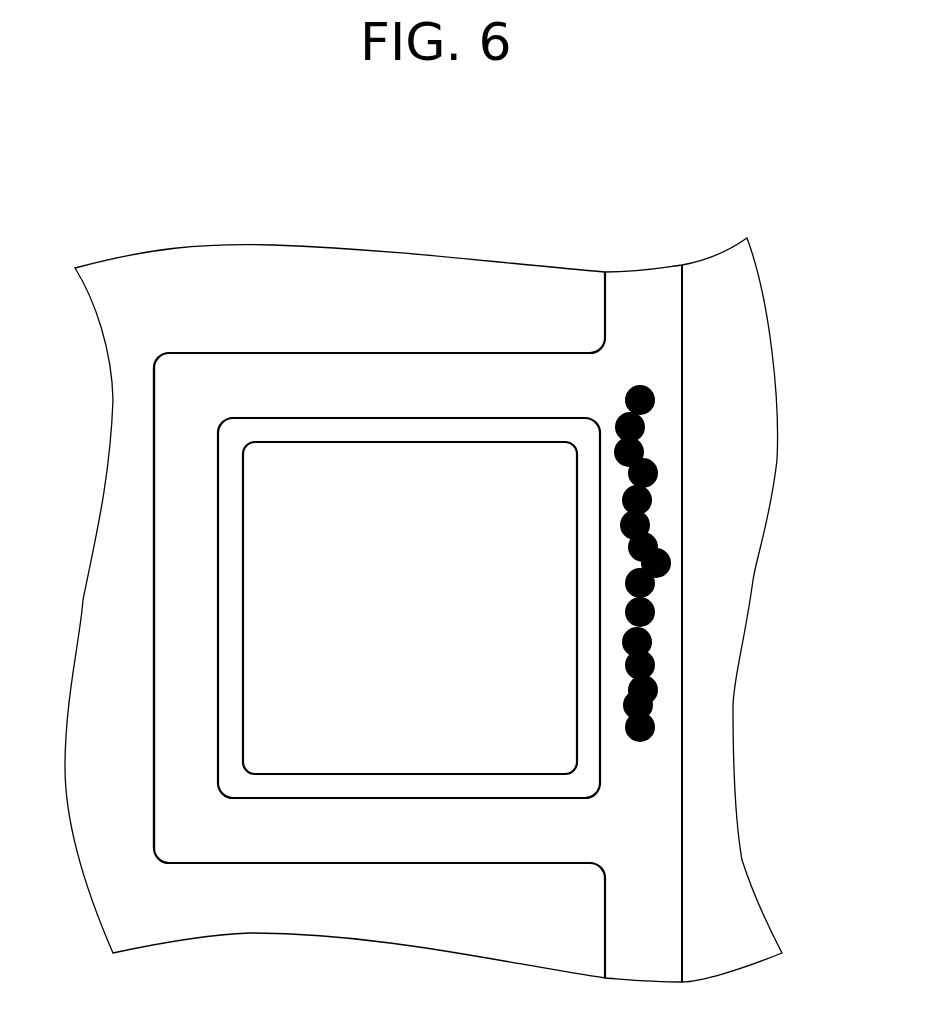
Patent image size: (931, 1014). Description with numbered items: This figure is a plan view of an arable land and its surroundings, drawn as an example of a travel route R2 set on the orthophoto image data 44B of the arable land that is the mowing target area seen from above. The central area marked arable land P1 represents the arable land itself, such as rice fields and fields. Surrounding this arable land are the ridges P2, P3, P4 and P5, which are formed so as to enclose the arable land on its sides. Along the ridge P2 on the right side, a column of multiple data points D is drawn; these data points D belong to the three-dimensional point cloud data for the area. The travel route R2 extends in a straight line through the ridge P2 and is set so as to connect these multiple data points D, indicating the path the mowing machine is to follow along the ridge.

The orthophoto image data 44B is at (273, 245).
The arable land P1 is at (322, 490).
The ridge P2 is at (648, 820).
The ridge P3 is at (405, 388).
The ridge P4 is at (193, 665).
The ridge P5 is at (372, 832).
The travel route R2 is at (658, 442).
The data points D is at (656, 545).